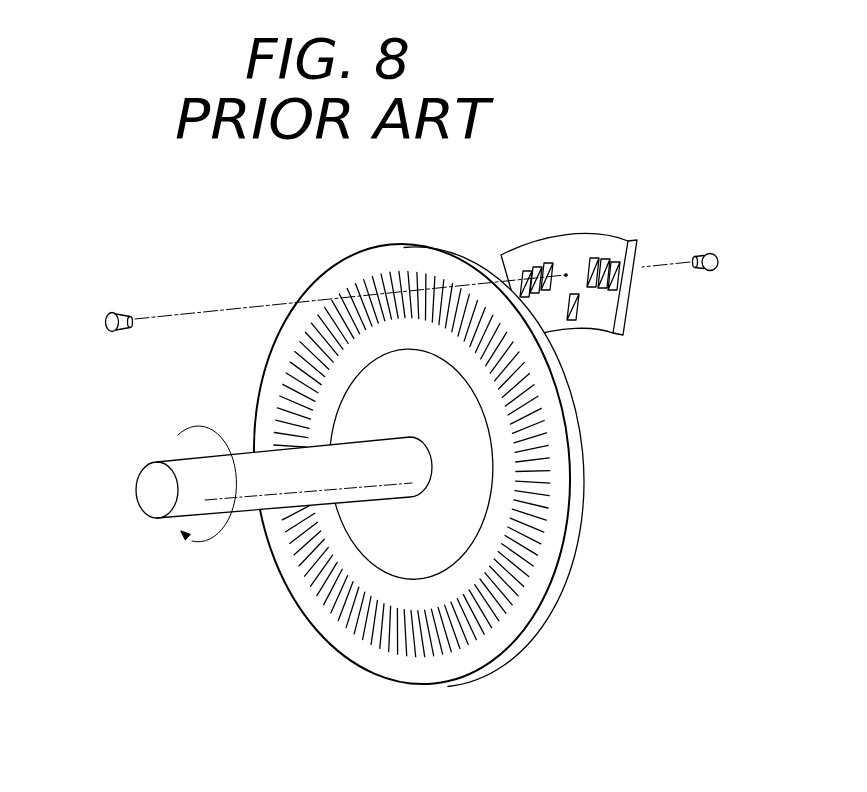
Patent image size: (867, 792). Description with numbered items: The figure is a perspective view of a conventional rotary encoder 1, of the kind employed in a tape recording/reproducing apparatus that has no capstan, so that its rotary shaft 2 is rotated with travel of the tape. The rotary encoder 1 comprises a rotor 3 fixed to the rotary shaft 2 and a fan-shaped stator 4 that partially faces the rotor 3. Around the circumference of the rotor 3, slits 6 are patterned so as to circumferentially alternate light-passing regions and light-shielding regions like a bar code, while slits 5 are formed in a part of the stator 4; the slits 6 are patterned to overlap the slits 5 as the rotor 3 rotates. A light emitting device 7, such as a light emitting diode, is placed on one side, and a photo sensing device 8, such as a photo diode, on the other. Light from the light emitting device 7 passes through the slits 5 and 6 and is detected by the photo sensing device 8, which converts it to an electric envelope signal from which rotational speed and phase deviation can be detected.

The rotary encoder 1 is at (268, 593).
The rotary shaft 2 is at (140, 477).
The rotor 3 is at (368, 263).
The stator 4 is at (593, 330).
The slits 5 is at (590, 257).
The slits 6 is at (418, 643).
The light emitting device 7 is at (115, 313).
The photo sensing device 8 is at (713, 250).